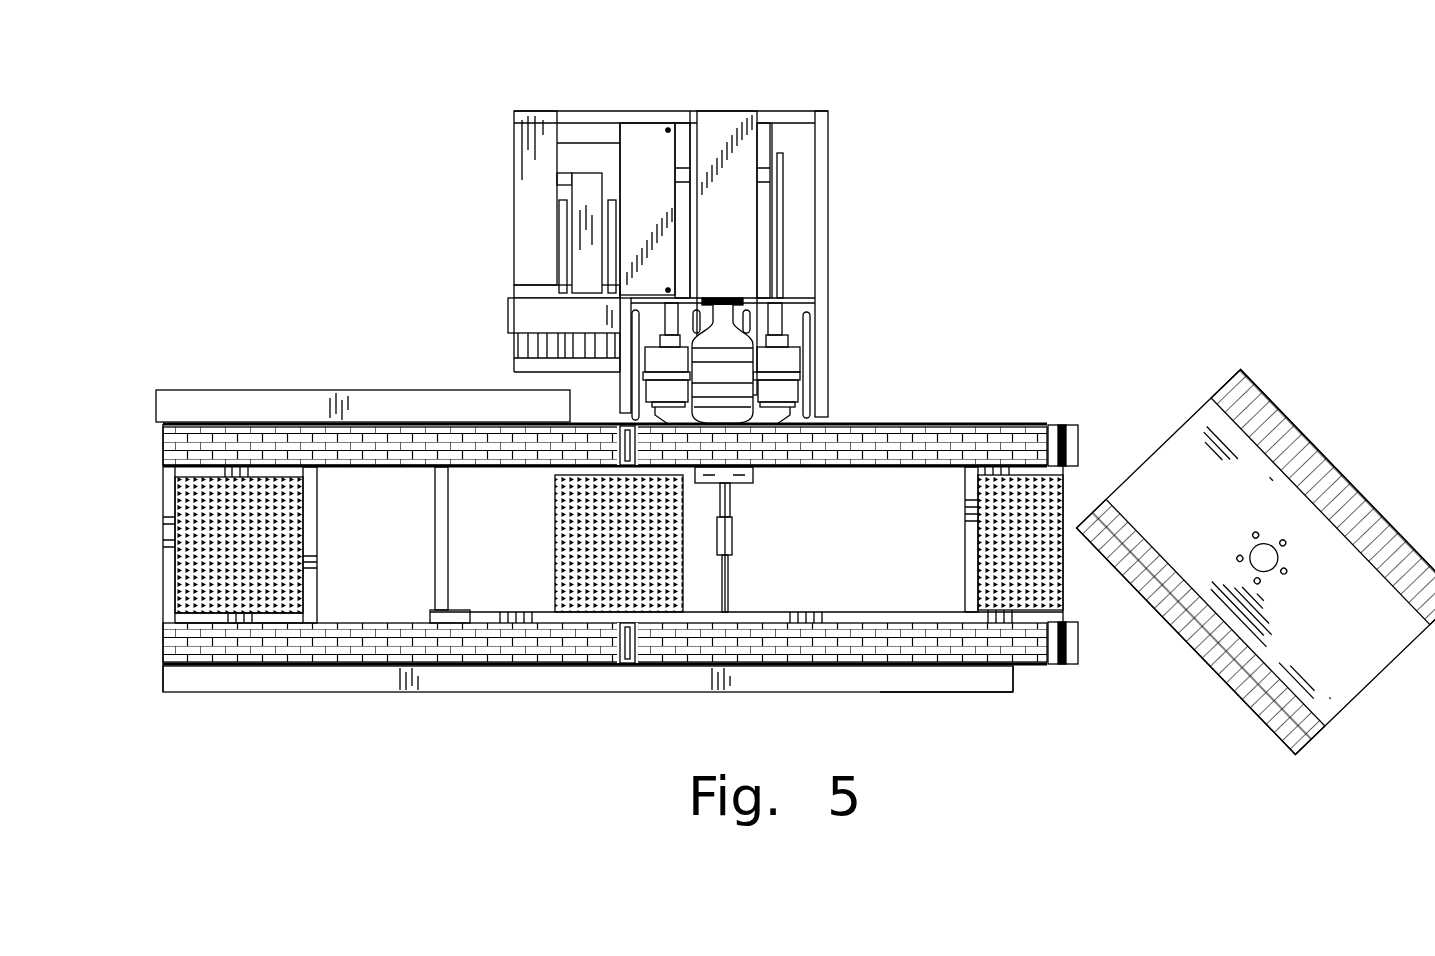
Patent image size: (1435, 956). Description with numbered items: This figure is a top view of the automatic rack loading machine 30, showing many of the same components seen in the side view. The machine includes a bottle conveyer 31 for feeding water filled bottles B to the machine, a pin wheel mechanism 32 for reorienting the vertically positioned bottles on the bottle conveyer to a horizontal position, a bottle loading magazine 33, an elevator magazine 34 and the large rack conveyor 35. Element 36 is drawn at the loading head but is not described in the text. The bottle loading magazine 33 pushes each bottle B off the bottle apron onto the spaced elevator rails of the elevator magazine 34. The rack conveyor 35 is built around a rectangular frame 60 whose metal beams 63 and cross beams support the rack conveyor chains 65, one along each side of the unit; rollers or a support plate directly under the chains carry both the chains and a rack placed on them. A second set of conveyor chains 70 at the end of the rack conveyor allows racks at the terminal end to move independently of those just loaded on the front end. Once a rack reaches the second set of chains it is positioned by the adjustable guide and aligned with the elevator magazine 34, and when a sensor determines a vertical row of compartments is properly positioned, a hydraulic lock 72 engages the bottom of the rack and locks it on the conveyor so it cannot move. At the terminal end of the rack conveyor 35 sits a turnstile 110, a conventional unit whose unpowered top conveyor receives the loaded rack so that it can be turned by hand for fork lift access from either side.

The automatic rack loading machine 30 is at (745, 85).
The bottle conveyer 31 is at (287, 390).
The pin wheel mechanism 32 is at (552, 378).
The bottle loading magazine 33 is at (598, 170).
The elevator magazine 34 is at (833, 370).
The rack conveyor 35 is at (348, 693).
The gripper head 36 is at (530, 313).
The rectangular frame 60 is at (600, 693).
The metal beams 63 is at (868, 680).
The rack conveyor chains 65 is at (378, 468).
The conveyor chains 70 is at (887, 467).
The hydraulic lock 72 is at (747, 485).
The turnstile 110 is at (1241, 707).
The bottle B is at (728, 330).